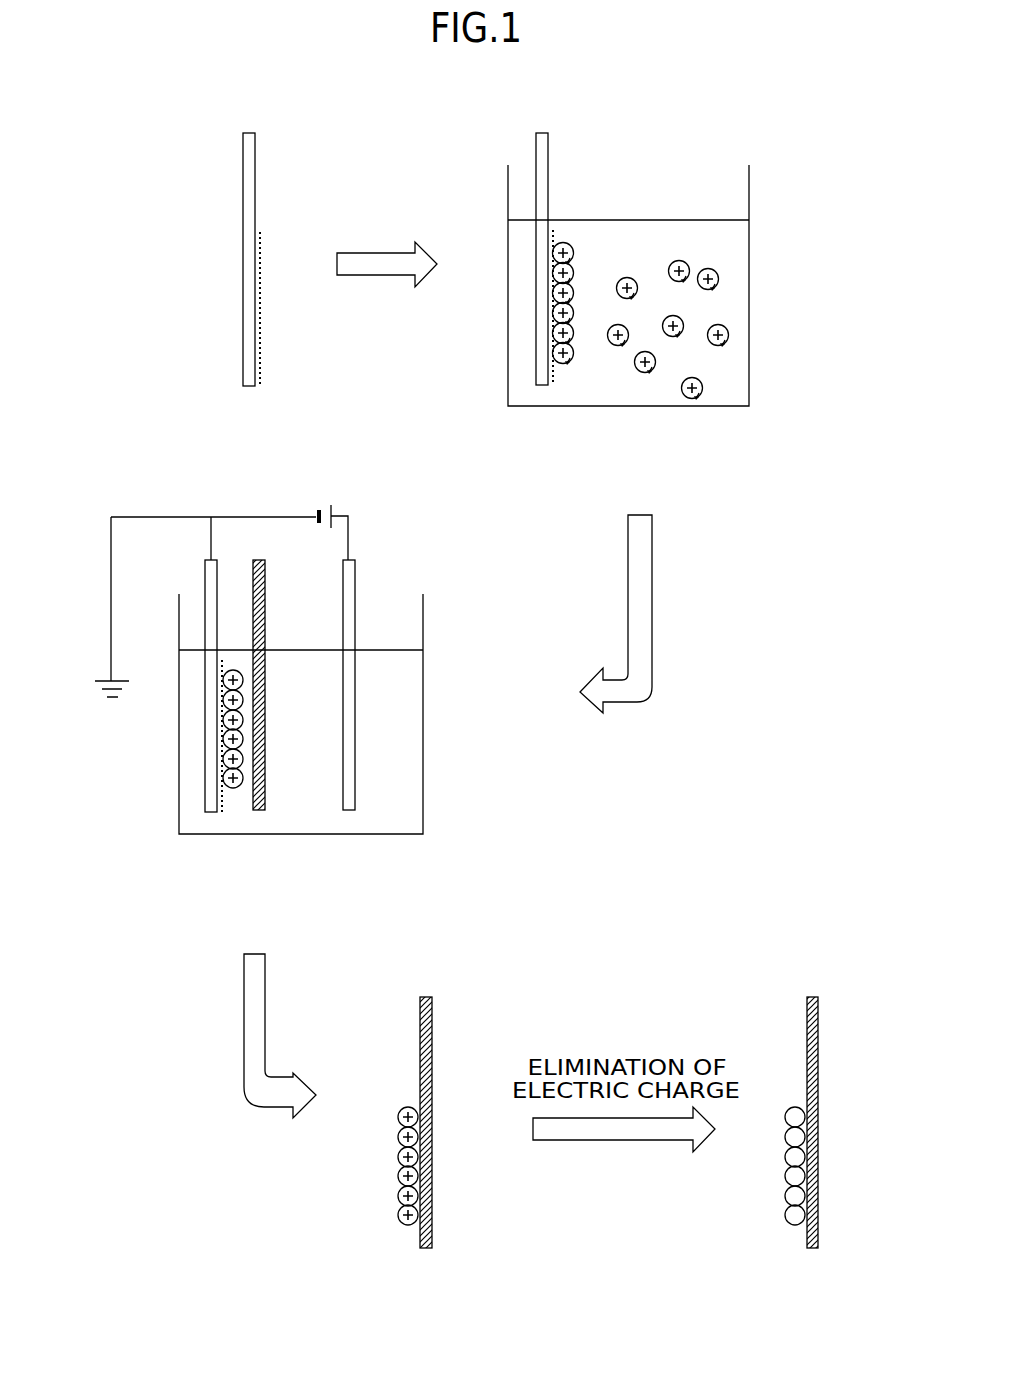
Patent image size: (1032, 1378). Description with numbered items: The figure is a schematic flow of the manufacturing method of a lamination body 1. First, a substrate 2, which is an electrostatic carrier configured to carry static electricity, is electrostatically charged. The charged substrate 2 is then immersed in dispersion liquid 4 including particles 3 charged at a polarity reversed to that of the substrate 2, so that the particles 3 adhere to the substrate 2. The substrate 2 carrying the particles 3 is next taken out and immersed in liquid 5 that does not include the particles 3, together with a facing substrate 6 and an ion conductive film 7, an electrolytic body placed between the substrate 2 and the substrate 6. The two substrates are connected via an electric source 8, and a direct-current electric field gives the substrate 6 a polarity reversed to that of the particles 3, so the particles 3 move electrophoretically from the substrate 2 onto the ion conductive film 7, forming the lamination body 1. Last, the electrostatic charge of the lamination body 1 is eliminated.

The lamination body 1 is at (464, 981).
The substrate 2 is at (243, 185).
The particles 3 is at (570, 365).
The dispersion liquid 4 is at (700, 238).
The liquid 5 is at (412, 724).
The substrate 6 is at (349, 811).
The ion conductive film 7 is at (259, 811).
The power source 8 is at (331, 503).